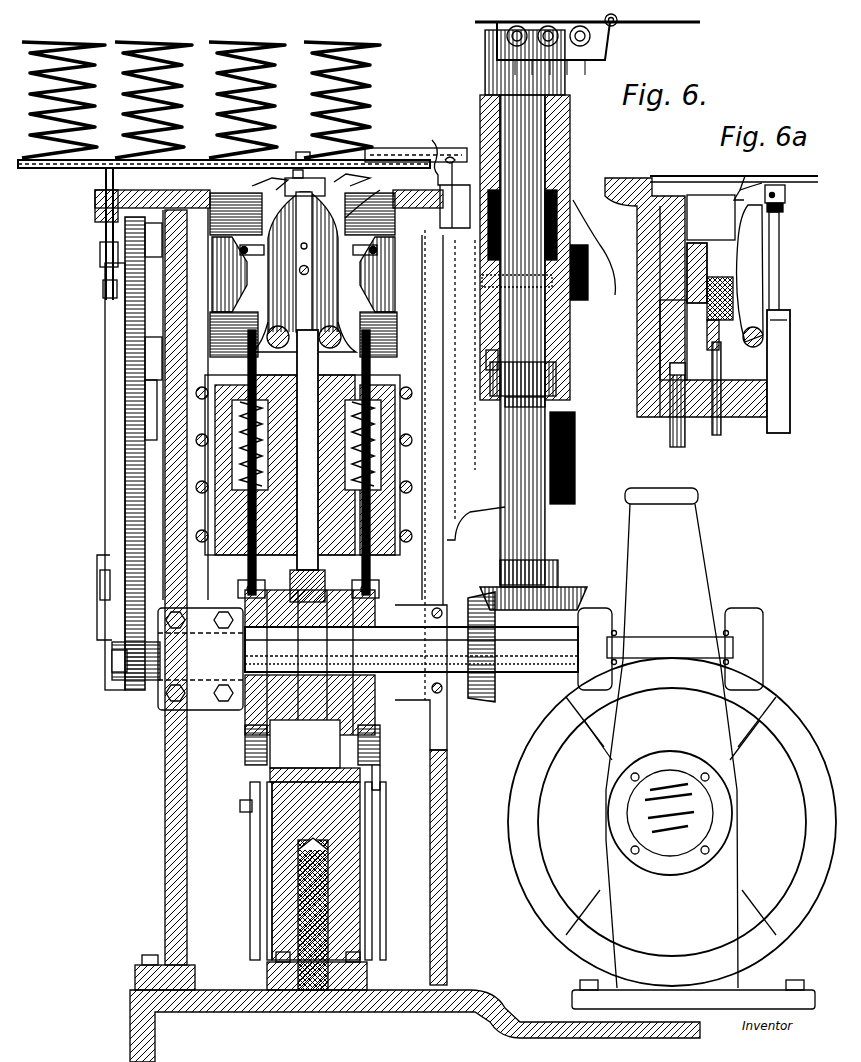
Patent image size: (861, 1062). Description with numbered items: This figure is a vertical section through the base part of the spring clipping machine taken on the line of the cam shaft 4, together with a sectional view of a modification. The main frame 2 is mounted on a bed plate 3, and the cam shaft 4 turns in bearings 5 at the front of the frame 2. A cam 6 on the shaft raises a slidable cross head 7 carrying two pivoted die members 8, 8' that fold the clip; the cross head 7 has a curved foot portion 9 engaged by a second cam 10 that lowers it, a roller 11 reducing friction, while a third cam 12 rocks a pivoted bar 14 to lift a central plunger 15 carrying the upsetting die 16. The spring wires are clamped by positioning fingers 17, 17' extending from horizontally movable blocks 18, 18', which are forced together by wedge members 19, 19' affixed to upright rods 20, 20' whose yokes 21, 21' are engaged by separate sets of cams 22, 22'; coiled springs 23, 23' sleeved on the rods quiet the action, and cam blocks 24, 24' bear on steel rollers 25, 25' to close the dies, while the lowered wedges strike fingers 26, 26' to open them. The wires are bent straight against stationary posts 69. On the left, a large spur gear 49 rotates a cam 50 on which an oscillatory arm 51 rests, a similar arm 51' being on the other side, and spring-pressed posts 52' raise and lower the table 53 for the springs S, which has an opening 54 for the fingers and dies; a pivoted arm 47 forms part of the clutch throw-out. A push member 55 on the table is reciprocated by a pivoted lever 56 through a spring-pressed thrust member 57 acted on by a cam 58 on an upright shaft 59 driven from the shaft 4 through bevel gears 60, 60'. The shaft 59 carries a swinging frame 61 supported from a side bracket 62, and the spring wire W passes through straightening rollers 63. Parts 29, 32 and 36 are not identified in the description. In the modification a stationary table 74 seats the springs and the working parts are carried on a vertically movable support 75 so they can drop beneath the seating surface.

In FIG. 6, the springs S is at (318, 70).
In FIG. 6, the spring wire W is at (664, 25).
In FIG. 6, the main frame 2 is at (165, 878).
In FIG. 6A, the main frame 2 is at (637, 367).
In FIG. 6, the bed plate 3 is at (130, 1020).
In FIG. 6, the cam shaft 4 is at (535, 674).
In FIG. 6, the bearings 5 is at (200, 659).
In FIG. 6, the cam 6 is at (342, 742).
In FIG. 6, the cross head 7 is at (215, 466).
In FIG. 6, the pivoted die member 8 is at (289, 251).
In FIG. 6A, the pivoted die member 8 is at (770, 273).
In FIG. 6, the pivoted die member 8' is at (349, 272).
In FIG. 6, the curved foot portion 9 is at (276, 820).
In FIG. 6, the second cam 10 is at (272, 718).
In FIG. 6, the roller 11 is at (380, 578).
In FIG. 6, the third cam 12 is at (312, 722).
In FIG. 6, the pivoted bar 14 is at (292, 590).
In FIG. 6, the central plunger 15 is at (307, 450).
In FIG. 6A, the central plunger 15 is at (790, 350).
In FIG. 6, the upsetting die 16 is at (365, 192).
In FIG. 6A, the upsetting die 16 is at (780, 230).
In FIG. 6, the positioning fingers 17 is at (262, 178).
In FIG. 6A, the positioning fingers 17 is at (745, 176).
In FIG. 6, the positioning fingers 17' is at (352, 175).
In FIG. 6, the horizontally movable block 18 is at (222, 214).
In FIG. 6A, the horizontally movable block 18 is at (711, 217).
In FIG. 6, the horizontally movable block 18' is at (384, 214).
In FIG. 6, the wedge member 19 is at (214, 274).
In FIG. 6A, the wedge member 19 is at (711, 273).
In FIG. 6, the wedge member 19' is at (391, 274).
In FIG. 6, the upright rod 20 is at (230, 462).
In FIG. 6A, the upright rod 20 is at (708, 394).
In FIG. 6, the upright rod 20' is at (395, 462).
In FIG. 6, the yoke 21 is at (235, 590).
In FIG. 6, the yoke 21' is at (393, 777).
In FIG. 6, the cams 22 is at (267, 745).
In FIG. 6, the cams 22' is at (388, 745).
In FIG. 6, the coiled spring 23 is at (192, 464).
In FIG. 6, the coiled spring 23' is at (412, 464).
In FIG. 6, the cam block 24 is at (219, 323).
In FIG. 6A, the cam block 24 is at (733, 313).
In FIG. 6, the cam block 24' is at (391, 323).
In FIG. 6, the steel roller 25 is at (222, 265).
In FIG. 6, the steel roller 25' is at (388, 246).
In FIG. 6, the finger 26 is at (276, 347).
In FIG. 6A, the finger 26 is at (752, 354).
In FIG. 6, the finger 26' is at (333, 347).
In FIG. 6, the flange 29 is at (95, 210).
In FIG. 6A, the collar 32 is at (784, 208).
In FIG. 6, the pinion 36 is at (135, 682).
In FIG. 6, the arm 47 is at (97, 548).
In FIG. 6, the large spur gear 49 is at (125, 335).
In FIG. 6, the cam 50 is at (105, 316).
In FIG. 6, the oscillatory arm 51 is at (90, 270).
In FIG. 6, the arm 51' is at (505, 289).
In FIG. 6, the spring-pressed posts 52' is at (88, 234).
In FIG. 6, the flanged guide plate or table 53 is at (52, 170).
In FIG. 6, the opening 54 is at (300, 152).
In FIG. 6, the push member 55 is at (395, 148).
In FIG. 6, the pivoted lever 56 is at (436, 142).
In FIG. 6, the spring-pressed thrust member 57 is at (465, 465).
In FIG. 6, the cam 58 is at (557, 378).
In FIG. 6, the upright shaft 59 is at (548, 402).
In FIG. 6, the bevel gear 60 is at (536, 585).
In FIG. 6, the bevel gear 60' is at (471, 637).
In FIG. 6, the swinging frame 61 is at (570, 128).
In FIG. 6, the side bracket 62 is at (576, 460).
In FIG. 6, the straightening rollers 63 is at (598, 36).
In FIG. 6A, the stationary posts or lugs 69 is at (775, 185).
In FIG. 6A, the stationary plate or table 74 is at (707, 176).
In FIG. 6A, the vertically-movable support 75 is at (640, 220).